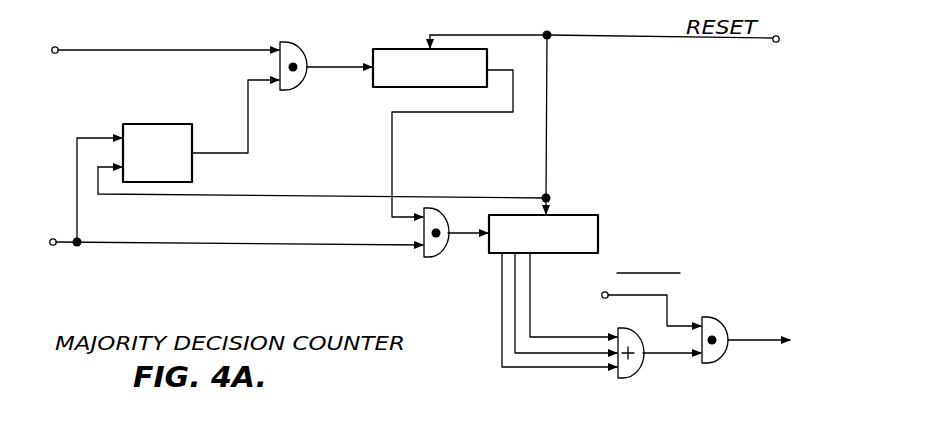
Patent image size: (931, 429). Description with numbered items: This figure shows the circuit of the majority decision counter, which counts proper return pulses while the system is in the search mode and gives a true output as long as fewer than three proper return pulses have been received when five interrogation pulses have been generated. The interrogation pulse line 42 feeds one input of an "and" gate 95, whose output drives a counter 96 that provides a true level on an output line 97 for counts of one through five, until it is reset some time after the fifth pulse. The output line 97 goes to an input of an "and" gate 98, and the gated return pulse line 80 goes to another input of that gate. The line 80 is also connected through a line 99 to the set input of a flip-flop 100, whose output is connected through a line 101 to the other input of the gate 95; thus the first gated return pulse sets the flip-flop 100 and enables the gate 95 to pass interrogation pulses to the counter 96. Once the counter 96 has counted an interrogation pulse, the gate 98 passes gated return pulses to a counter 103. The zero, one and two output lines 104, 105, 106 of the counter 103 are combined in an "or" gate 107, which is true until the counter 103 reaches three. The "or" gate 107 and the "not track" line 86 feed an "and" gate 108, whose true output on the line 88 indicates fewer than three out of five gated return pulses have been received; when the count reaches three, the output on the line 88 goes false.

The interrogation pulse line 42 is at (78, 49).
The "and" gate 95 is at (305, 50).
The counter 96 is at (392, 48).
The output line 97 is at (530, 63).
The "and" gate 98 is at (447, 213).
The line 99 is at (78, 156).
The flip-flop 100 is at (192, 167).
The line 101 is at (248, 153).
The line 80 is at (62, 238).
The counter 103 is at (575, 213).
The zero output line 104 is at (502, 291).
The one output line 105 is at (515, 318).
The two output line 106 is at (530, 322).
The "or" gate 107 is at (637, 370).
The "not track" line 86 is at (654, 298).
The "and" gate 108 is at (708, 365).
The line 88 is at (736, 338).